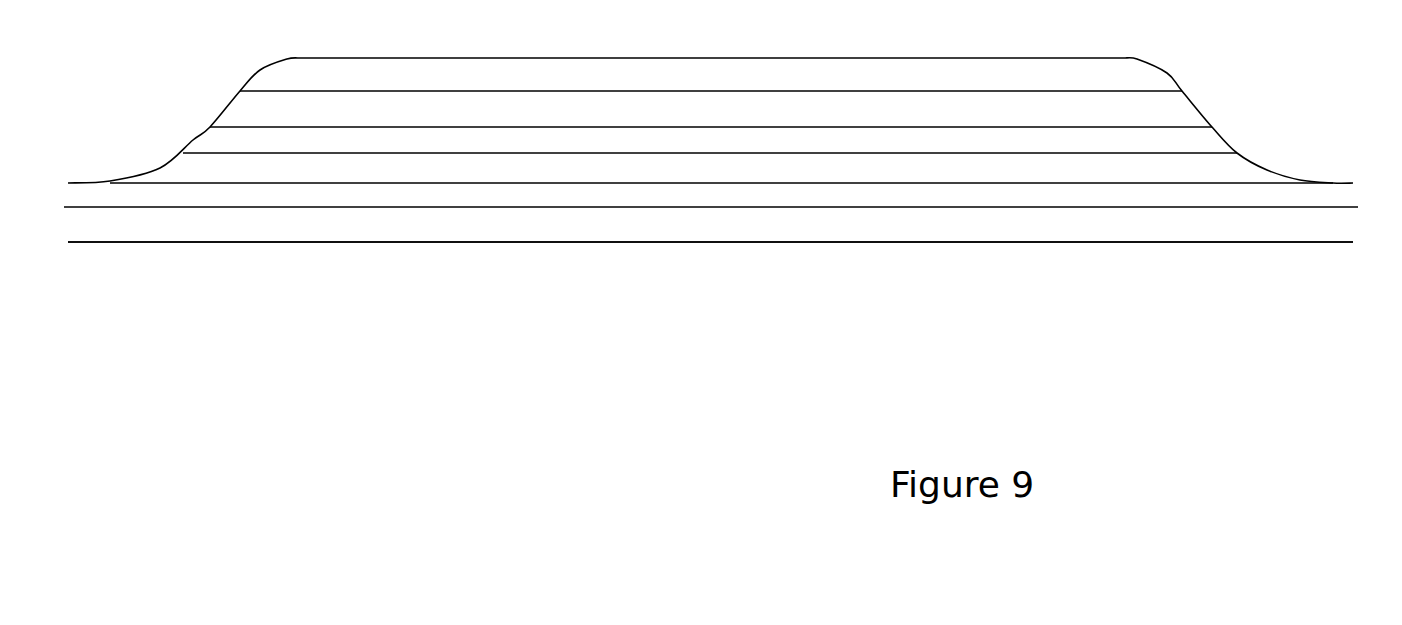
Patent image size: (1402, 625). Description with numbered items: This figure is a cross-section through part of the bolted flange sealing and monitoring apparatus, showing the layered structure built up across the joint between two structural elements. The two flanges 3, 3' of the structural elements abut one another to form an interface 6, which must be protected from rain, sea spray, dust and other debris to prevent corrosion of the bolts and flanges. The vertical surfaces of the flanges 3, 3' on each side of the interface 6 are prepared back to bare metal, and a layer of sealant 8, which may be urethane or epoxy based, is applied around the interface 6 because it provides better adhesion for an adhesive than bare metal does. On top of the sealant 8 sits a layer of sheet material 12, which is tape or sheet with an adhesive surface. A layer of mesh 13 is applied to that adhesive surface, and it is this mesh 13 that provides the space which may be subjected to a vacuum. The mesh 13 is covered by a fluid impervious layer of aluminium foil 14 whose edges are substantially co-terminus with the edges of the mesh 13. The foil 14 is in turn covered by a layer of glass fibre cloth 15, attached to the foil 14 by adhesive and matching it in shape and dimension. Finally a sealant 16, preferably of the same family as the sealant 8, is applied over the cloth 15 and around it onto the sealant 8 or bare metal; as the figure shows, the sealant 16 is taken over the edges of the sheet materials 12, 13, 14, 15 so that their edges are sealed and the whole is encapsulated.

The flange 3 is at (384, 314).
The flange 3' is at (1026, 288).
The interface 6 is at (685, 225).
The sealant 8 is at (1302, 207).
The sheet material 12 is at (547, 153).
The mesh 13 is at (608, 153).
The aluminium foil 14 is at (665, 127).
The glass fibre cloth 15 is at (763, 91).
The sealant 16 is at (835, 59).